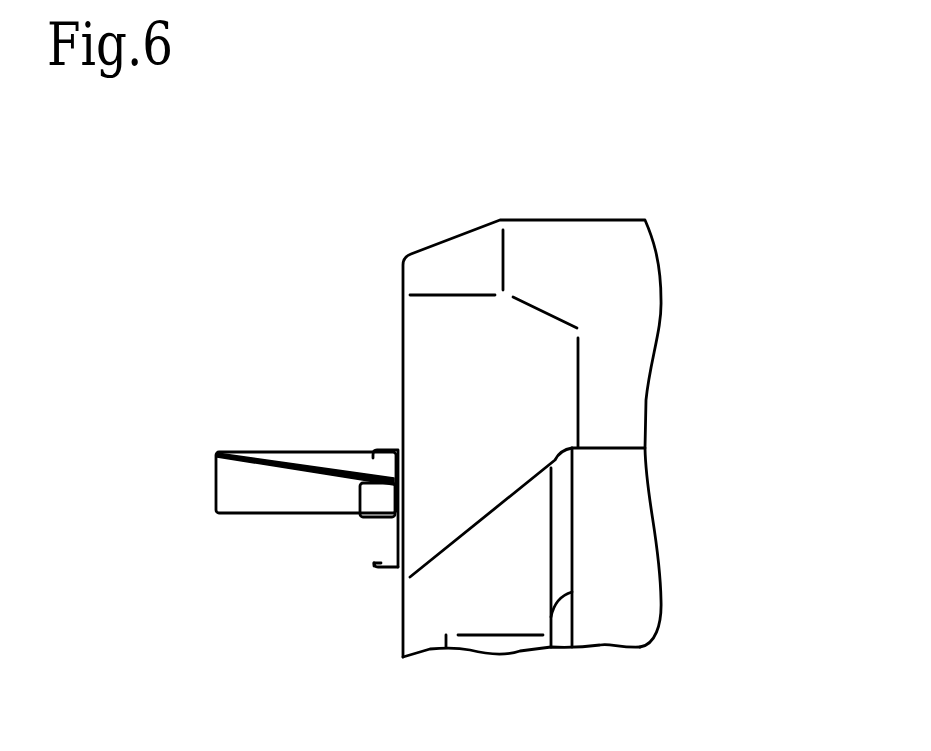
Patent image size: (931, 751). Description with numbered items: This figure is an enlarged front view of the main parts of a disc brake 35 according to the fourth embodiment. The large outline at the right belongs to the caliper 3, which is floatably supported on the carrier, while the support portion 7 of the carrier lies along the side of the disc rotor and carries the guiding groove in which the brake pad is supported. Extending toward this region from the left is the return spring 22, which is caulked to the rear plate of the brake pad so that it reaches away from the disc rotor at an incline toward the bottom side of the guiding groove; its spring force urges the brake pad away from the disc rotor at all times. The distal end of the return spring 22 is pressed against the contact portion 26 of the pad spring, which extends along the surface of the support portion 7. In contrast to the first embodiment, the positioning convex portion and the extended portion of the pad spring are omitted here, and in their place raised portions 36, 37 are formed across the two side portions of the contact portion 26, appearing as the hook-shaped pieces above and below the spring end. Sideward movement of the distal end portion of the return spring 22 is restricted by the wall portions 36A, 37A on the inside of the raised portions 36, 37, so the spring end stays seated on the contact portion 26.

The caliper 3 is at (563, 260).
The support portion 7 is at (453, 273).
The return spring 22 is at (237, 493).
The contact portion 26 is at (393, 540).
The disc brake 35 is at (514, 429).
The raised portion 36 is at (385, 450).
The wall portion 36A is at (378, 455).
The raised portion 37 is at (381, 570).
The wall portion 37A is at (378, 559).